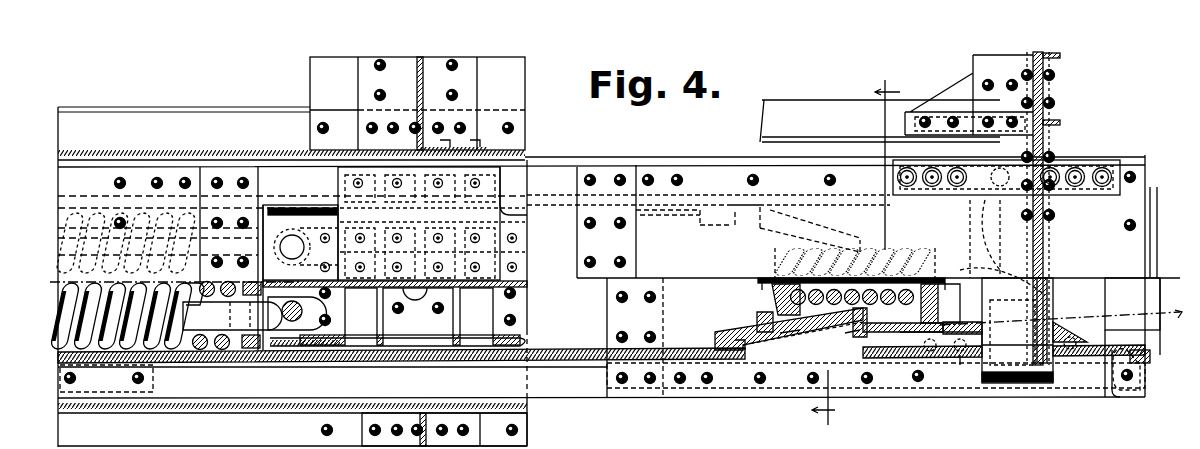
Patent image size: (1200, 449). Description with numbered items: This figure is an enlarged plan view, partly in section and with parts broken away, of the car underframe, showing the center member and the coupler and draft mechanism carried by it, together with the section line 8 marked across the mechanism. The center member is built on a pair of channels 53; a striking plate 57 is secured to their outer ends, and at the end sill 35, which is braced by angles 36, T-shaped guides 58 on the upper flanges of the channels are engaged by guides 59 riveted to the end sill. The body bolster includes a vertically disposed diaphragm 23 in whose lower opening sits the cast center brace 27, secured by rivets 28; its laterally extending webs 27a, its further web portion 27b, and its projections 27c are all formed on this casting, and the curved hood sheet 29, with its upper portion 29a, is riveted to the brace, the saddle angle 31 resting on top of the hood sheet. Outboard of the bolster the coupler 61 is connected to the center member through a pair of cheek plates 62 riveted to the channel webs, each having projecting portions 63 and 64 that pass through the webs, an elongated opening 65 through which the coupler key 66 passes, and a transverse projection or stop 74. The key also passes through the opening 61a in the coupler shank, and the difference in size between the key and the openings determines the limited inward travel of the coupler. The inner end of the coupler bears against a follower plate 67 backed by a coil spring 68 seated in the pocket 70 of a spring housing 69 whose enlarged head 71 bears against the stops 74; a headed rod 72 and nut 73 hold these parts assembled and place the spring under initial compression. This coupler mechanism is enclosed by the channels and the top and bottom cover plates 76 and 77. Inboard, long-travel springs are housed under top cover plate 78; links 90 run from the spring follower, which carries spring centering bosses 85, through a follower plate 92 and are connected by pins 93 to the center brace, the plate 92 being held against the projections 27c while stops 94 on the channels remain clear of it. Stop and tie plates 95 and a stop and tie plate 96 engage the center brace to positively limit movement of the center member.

The top cover plate 78 is at (59, 191).
The top flange of sill 29a is at (185, 120).
The hood sheet 29 is at (118, 153).
The stop and tie plate 96 is at (207, 175).
The spring centering bosses 85 is at (170, 407).
The links 90 is at (185, 345).
The follower plate 92 is at (262, 205).
The pins 93 is at (292, 233).
The stops 94 is at (302, 212).
The diaphragm 23 is at (418, 75).
The saddle angle 31 is at (468, 140).
The projections of center brace 27c is at (300, 446).
The center brace 27 is at (512, 260).
The laterally extending webs 27a is at (502, 180).
The side flange of draft casting 27b is at (512, 214).
The rivets 28 is at (553, 292).
The channels 53 is at (576, 160).
The bottom cover plate 77 is at (605, 355).
The enlarged head 71 is at (899, 375).
The top cover plate 76 is at (705, 172).
The section line 8 is at (856, 252).
The angles 36 is at (905, 112).
The guides 59 is at (1054, 137).
The T-shaped guides 58 is at (1100, 170).
The striking plate 57 is at (1157, 195).
The headed rod 72 is at (775, 272).
The nut 73 is at (762, 284).
The coil spring 68 is at (778, 302).
The pocket 70 is at (775, 316).
The follower plate 67 is at (946, 294).
The elongated opening 65 is at (982, 336).
The coupler key 66 is at (1015, 362).
The projecting portion 63 is at (975, 368).
The cheek plates 62 is at (1000, 362).
The projecting portion 64 is at (737, 345).
The spring housing 69 is at (792, 335).
The transverse projection or stop 74 is at (848, 340).
The end sill 35 is at (1010, 262).
The opening in coupler shank 61a is at (1047, 295).
The coupler 61 is at (1180, 315).
The stop and tie plates 95 is at (630, 251).